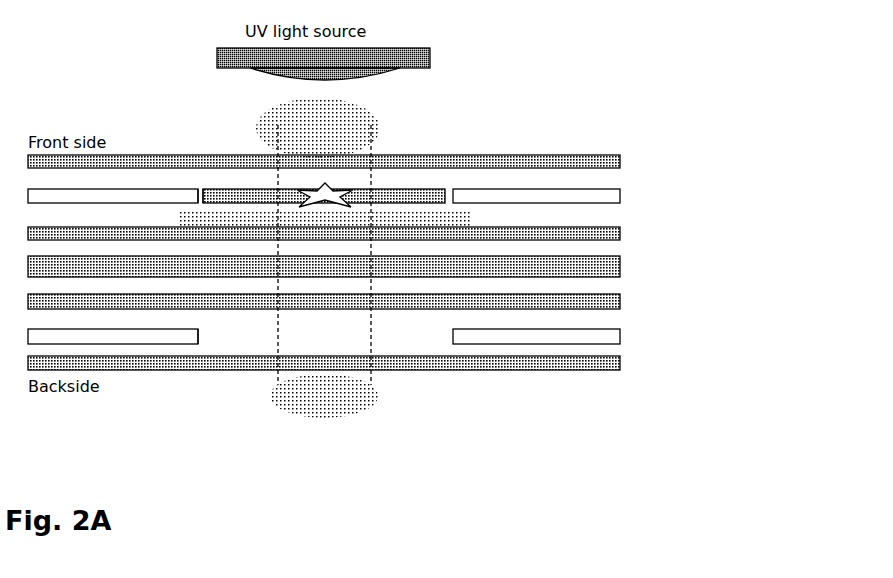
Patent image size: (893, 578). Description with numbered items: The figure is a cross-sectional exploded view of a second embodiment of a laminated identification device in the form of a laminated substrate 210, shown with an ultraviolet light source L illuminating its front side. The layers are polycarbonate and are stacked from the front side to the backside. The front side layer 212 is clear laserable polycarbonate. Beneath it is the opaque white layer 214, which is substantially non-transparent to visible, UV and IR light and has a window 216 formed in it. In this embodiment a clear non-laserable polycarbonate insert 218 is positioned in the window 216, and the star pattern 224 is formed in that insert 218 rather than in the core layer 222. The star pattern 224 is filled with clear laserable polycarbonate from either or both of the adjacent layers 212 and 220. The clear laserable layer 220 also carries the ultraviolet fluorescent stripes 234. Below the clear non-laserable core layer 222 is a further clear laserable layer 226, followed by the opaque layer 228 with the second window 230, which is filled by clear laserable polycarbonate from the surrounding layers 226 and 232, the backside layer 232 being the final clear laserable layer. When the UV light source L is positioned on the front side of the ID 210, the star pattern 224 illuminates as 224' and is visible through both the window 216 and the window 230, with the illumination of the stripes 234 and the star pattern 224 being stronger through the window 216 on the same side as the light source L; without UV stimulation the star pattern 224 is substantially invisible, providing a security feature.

The laminated substrate 210 is at (640, 103).
The front side layer 212 is at (630, 161).
The opaque layer with window 214 is at (630, 196).
The window 216 is at (199, 181).
The clear non-laserable polycarbonate insert 218 is at (219, 181).
The clear laserable polycarbonate layer 220 is at (630, 233).
The core layer 222 is at (630, 266).
The star pattern 224 is at (417, 158).
The illuminated star pattern 224' is at (387, 269).
The clear laserable polycarbonate layer 226 is at (630, 301).
The opaque layer with second window 228 is at (630, 336).
The window 230 is at (222, 341).
The backside layer 232 is at (630, 363).
The UV fluorescent stripes 234 is at (250, 236).
The UV light source L is at (441, 57).